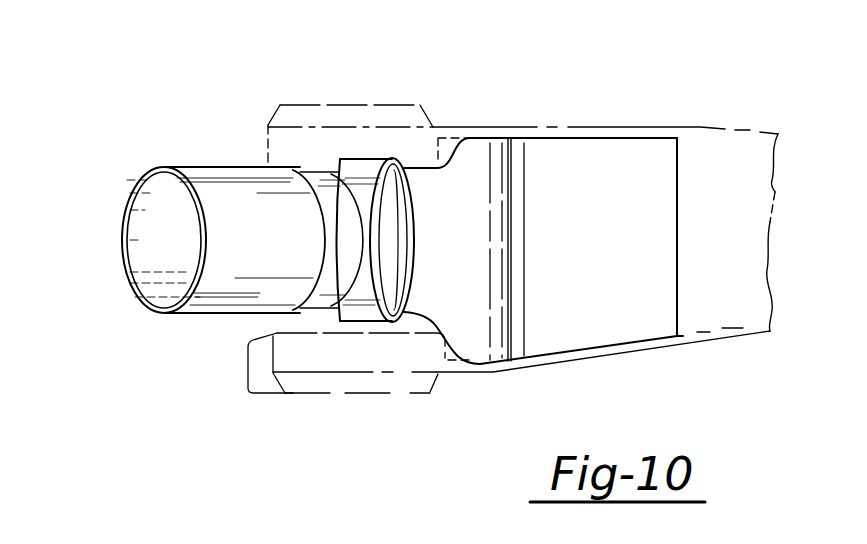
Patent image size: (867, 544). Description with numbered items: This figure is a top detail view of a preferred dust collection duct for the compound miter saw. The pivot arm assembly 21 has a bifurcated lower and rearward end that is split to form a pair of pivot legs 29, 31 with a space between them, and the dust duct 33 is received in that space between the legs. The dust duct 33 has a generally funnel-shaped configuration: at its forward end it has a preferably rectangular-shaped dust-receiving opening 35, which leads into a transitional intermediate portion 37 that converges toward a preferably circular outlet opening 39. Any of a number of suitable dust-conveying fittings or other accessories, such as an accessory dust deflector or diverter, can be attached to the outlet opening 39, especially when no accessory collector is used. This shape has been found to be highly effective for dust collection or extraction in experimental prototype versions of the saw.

The pivot arm assembly 21 is at (464, 126).
The pivot leg 29 is at (617, 348).
The pivot leg 31 is at (580, 128).
The dust duct 33 is at (624, 303).
The dust-receiving opening 35 is at (677, 237).
The transitional intermediate portion 37 is at (352, 172).
The outlet opening 39 is at (140, 230).